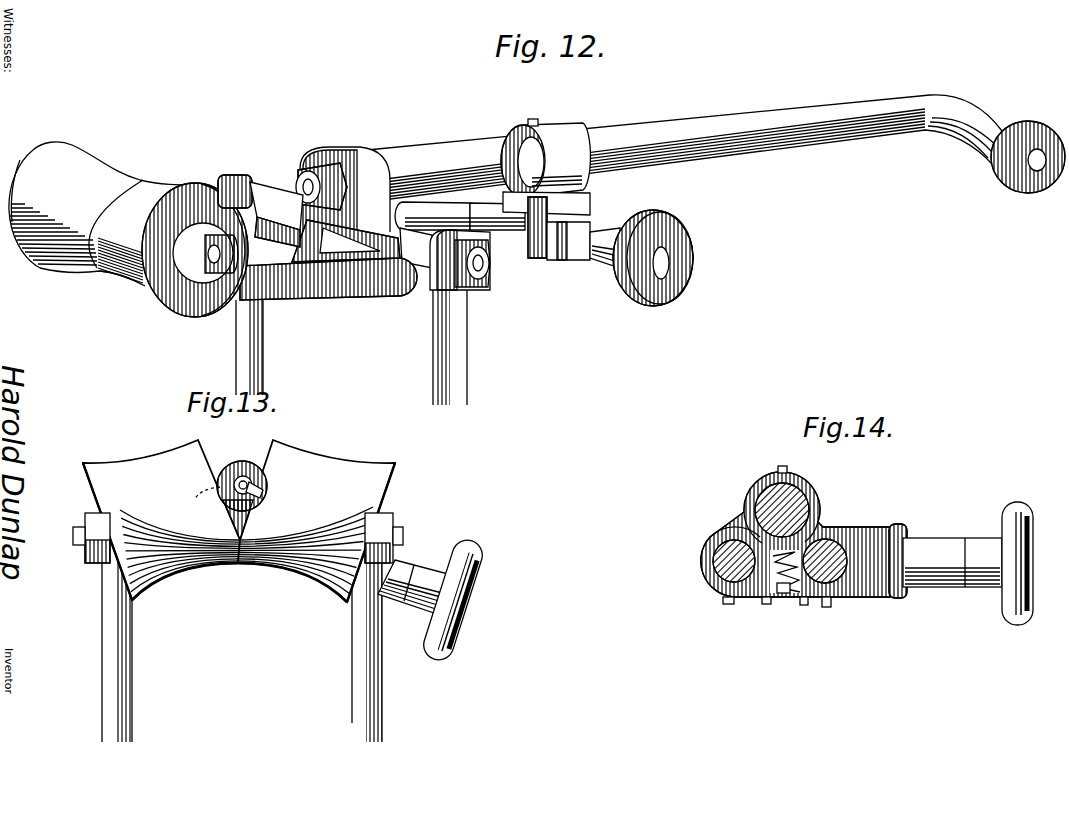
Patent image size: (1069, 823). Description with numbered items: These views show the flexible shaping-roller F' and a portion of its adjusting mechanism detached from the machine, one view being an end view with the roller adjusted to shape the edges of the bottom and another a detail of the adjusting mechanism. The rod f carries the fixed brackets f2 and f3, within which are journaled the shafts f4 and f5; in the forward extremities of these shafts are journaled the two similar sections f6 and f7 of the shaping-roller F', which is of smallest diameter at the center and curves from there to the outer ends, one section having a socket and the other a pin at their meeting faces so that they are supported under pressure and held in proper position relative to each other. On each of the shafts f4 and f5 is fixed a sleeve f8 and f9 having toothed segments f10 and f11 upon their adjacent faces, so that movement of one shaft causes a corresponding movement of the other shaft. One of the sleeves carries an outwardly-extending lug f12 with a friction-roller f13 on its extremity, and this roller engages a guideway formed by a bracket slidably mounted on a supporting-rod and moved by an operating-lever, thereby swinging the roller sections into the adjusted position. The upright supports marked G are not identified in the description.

In FIG. 12, the rod f is at (700, 122).
In FIG. 13, the rod f is at (223, 463).
In FIG. 14, the rod f is at (815, 507).
In FIG. 12, the bracket f2 is at (570, 133).
In FIG. 14, the bracket f2 is at (750, 492).
In FIG. 12, the bracket f3 is at (348, 157).
In FIG. 13, the bracket f3 is at (253, 470).
In FIG. 12, the shaft f4 is at (425, 203).
In FIG. 14, the shaft f4 is at (710, 580).
In FIG. 12, the shaft f5 is at (470, 213).
In FIG. 14, the shaft f5 is at (850, 597).
In FIG. 12, the section of the flexible shaping-roller f6 is at (123, 284).
In FIG. 13, the section of the flexible shaping-roller f6 is at (308, 573).
In FIG. 12, the section of the flexible shaping-roller f7 is at (57, 269).
In FIG. 13, the section of the flexible shaping-roller f7 is at (165, 573).
In FIG. 13, the sleeve f8 is at (220, 556).
In FIG. 14, the sleeve f8 is at (720, 597).
In FIG. 12, the sleeve f9 is at (537, 258).
In FIG. 13, the sleeve f9 is at (262, 556).
In FIG. 14, the sleeve f9 is at (835, 598).
In FIG. 14, the toothed segment f10 is at (768, 600).
In FIG. 12, the toothed segment f11 is at (490, 240).
In FIG. 14, the toothed segment f11 is at (792, 600).
In FIG. 12, the lug f12 is at (598, 262).
In FIG. 13, the lug f12 is at (407, 567).
In FIG. 14, the lug f12 is at (927, 547).
In FIG. 12, the friction-roller f13 is at (650, 305).
In FIG. 13, the friction-roller f13 is at (483, 560).
In FIG. 14, the friction-roller f13 is at (1047, 537).
In FIG. 12, the flexible shaping-roller F' is at (128, 210).
In FIG. 13, the flexible shaping-roller F' is at (239, 506).
In FIG. 12, the standard rods G is at (263, 327).
In FIG. 13, the standard rods G is at (133, 677).